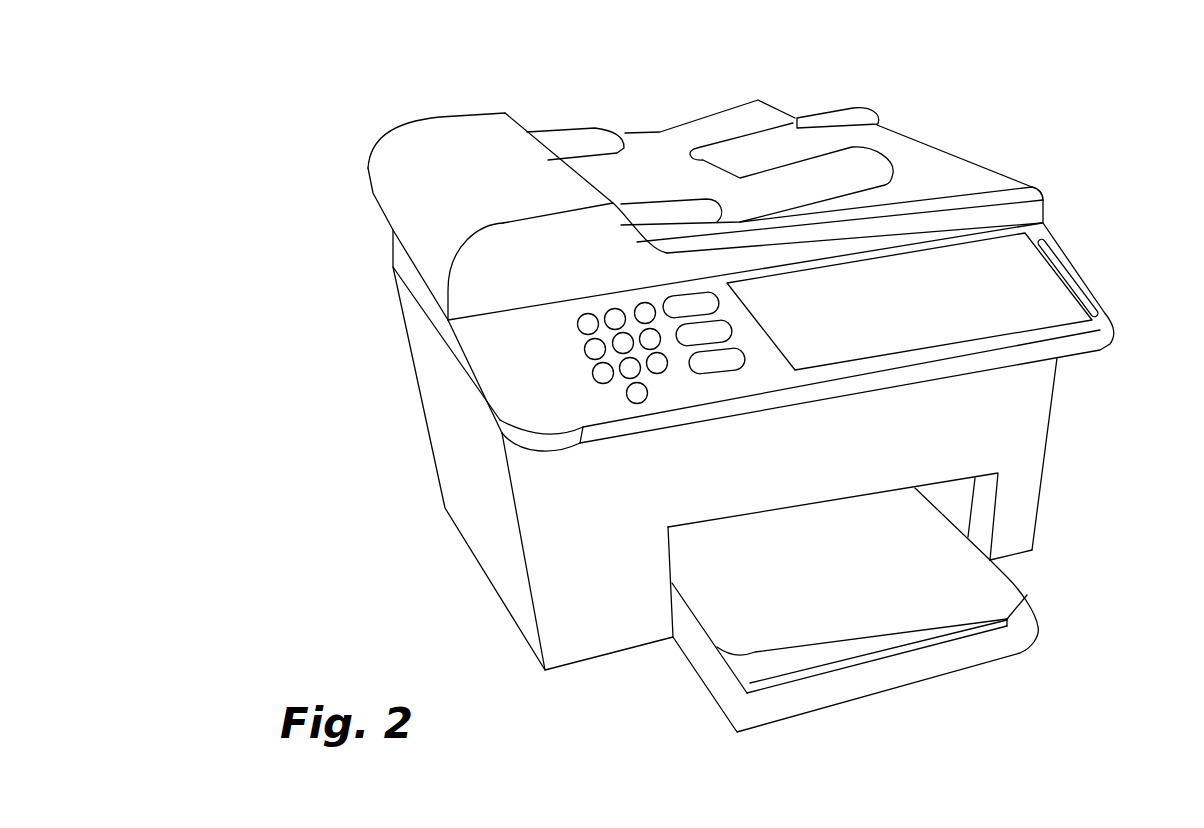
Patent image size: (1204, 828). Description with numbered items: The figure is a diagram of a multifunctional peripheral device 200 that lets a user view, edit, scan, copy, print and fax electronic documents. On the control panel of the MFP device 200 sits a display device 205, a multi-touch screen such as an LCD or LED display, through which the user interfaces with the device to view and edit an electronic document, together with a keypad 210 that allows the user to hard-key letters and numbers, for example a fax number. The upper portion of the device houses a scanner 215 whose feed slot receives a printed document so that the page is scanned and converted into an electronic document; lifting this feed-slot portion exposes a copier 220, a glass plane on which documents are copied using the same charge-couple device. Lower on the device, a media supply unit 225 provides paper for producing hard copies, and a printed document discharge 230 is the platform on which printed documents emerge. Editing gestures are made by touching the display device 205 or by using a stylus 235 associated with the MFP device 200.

The multifunctional peripheral device 200 is at (297, 140).
The display device 205 is at (1018, 262).
The keypad 210 is at (563, 360).
The scanner 215 is at (567, 100).
The copier 220 is at (380, 273).
The media supply unit 225 is at (1027, 618).
The printed document discharge 230 is at (933, 539).
The stylus 235 is at (1085, 298).